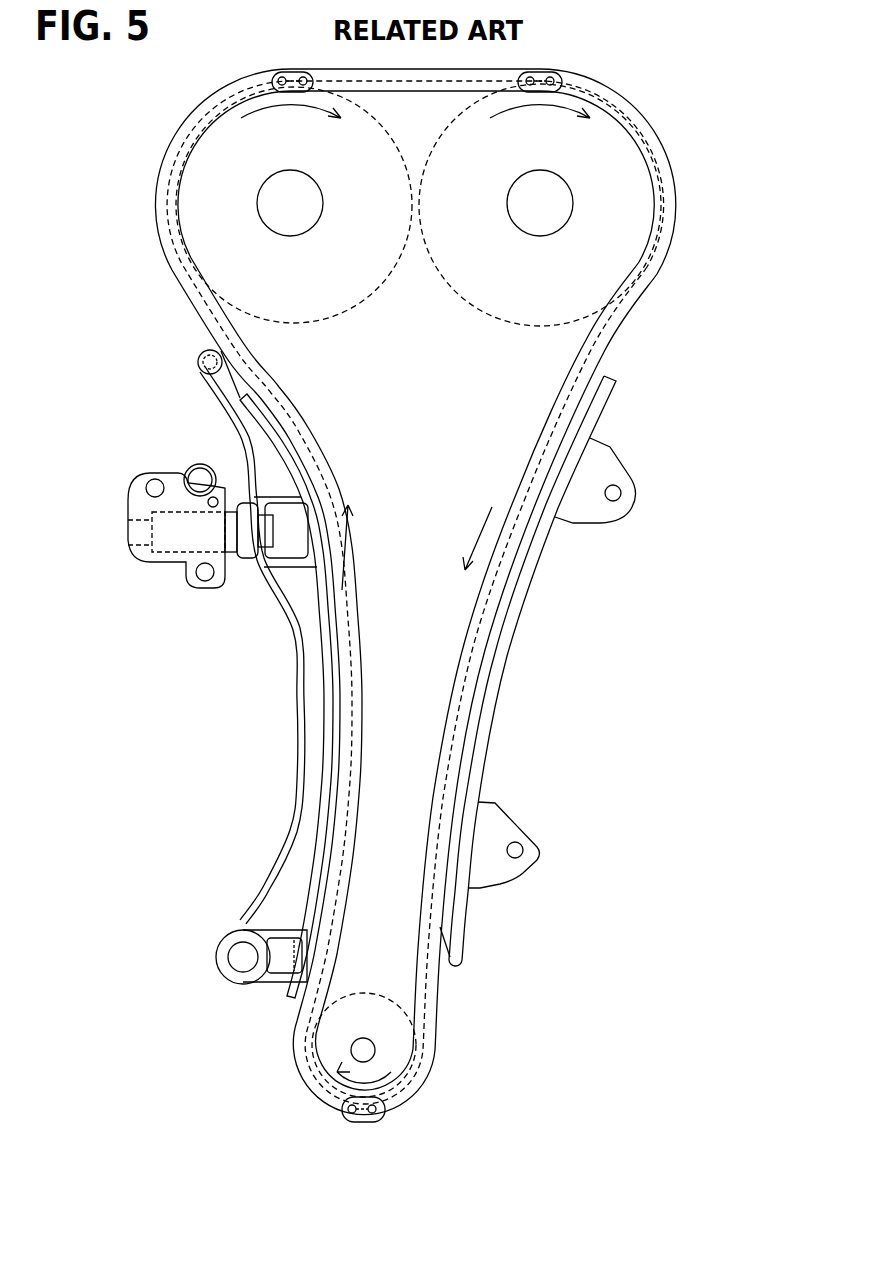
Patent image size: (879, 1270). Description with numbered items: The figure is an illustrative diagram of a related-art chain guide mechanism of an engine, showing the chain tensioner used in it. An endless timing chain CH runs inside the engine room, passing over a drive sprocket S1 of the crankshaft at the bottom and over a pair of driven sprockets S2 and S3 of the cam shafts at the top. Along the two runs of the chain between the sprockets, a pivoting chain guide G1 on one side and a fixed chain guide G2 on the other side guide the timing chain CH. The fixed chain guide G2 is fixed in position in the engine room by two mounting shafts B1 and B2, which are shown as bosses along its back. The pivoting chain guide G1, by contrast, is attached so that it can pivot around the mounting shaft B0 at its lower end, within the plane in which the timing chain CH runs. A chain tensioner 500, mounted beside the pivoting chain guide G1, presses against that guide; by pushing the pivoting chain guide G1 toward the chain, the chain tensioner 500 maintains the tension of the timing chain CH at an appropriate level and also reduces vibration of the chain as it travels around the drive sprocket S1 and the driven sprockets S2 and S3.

The timing chain CH is at (610, 325).
The drive sprocket S1 is at (395, 1048).
The driven sprocket S2 is at (207, 196).
The driven sprocket S3 is at (605, 190).
The pivoting chain guide G1 is at (302, 848).
The fixed chain guide G2 is at (490, 710).
The mounting shaft B0 is at (237, 954).
The mounting shaft B1 is at (622, 493).
The mounting shaft B2 is at (522, 850).
The chain tensioner 500 is at (140, 480).